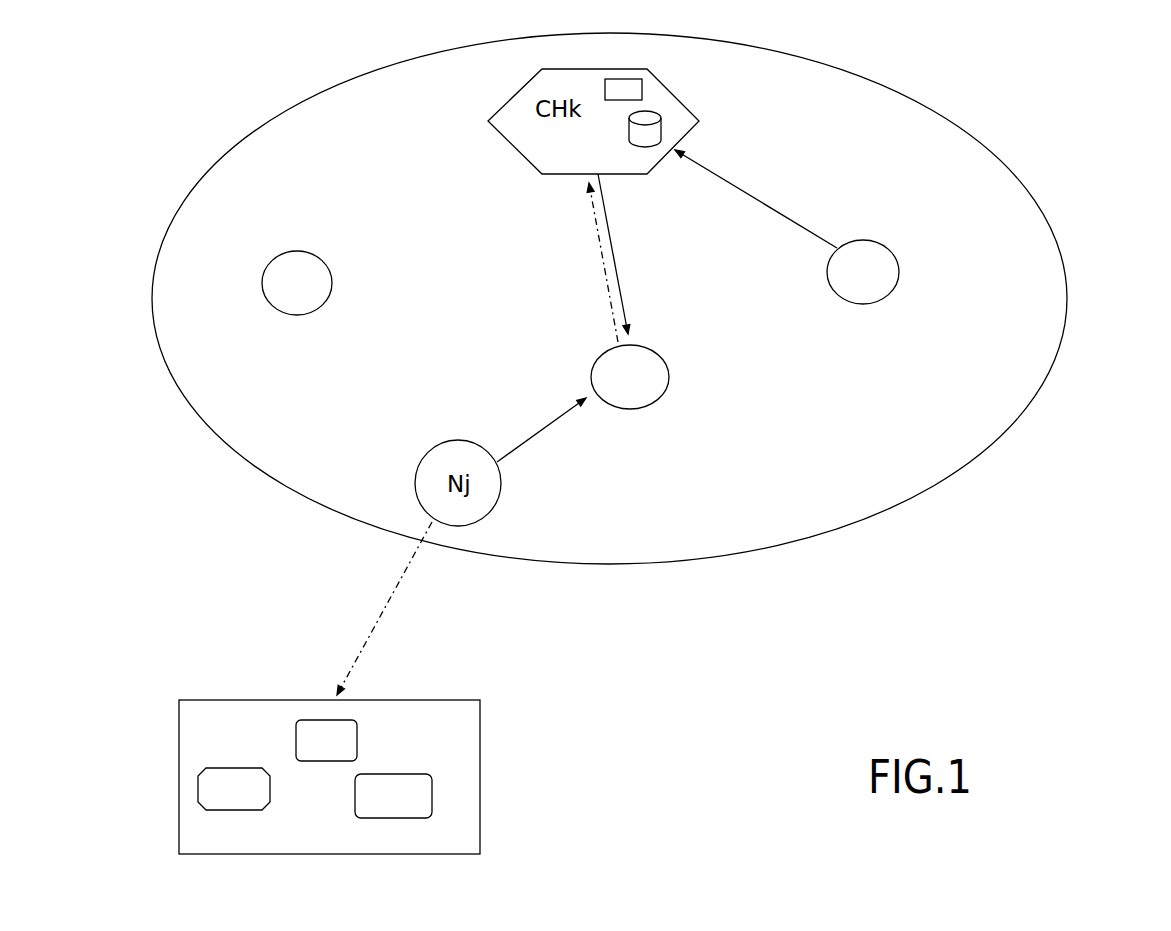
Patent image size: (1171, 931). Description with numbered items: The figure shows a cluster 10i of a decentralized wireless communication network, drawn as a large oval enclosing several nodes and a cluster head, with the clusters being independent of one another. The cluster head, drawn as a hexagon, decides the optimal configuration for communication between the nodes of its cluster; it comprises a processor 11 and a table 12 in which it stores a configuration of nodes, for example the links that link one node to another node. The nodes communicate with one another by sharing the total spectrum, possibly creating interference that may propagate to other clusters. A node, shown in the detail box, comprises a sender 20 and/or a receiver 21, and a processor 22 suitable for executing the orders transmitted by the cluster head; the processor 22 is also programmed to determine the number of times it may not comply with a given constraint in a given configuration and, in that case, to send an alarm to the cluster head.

The cluster 10i is at (995, 442).
The processor 11 is at (642, 89).
The table 12 is at (650, 137).
The sender 20 is at (296, 737).
The receiver 21 is at (390, 774).
The processor 22 is at (270, 785).